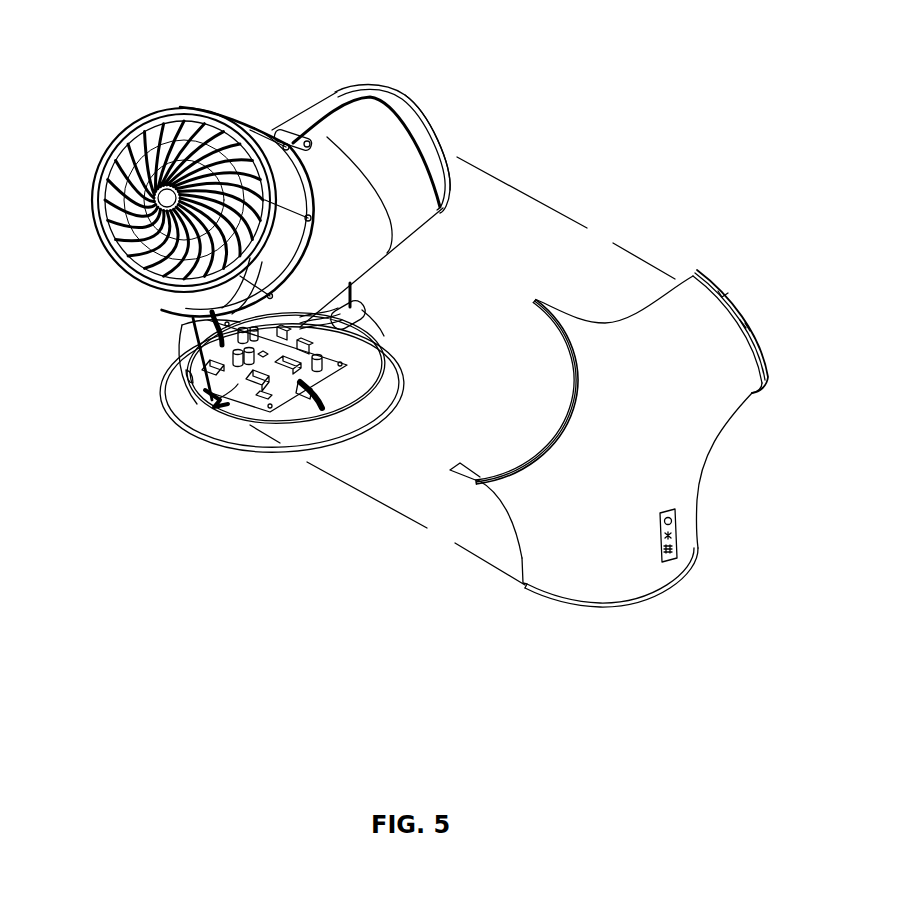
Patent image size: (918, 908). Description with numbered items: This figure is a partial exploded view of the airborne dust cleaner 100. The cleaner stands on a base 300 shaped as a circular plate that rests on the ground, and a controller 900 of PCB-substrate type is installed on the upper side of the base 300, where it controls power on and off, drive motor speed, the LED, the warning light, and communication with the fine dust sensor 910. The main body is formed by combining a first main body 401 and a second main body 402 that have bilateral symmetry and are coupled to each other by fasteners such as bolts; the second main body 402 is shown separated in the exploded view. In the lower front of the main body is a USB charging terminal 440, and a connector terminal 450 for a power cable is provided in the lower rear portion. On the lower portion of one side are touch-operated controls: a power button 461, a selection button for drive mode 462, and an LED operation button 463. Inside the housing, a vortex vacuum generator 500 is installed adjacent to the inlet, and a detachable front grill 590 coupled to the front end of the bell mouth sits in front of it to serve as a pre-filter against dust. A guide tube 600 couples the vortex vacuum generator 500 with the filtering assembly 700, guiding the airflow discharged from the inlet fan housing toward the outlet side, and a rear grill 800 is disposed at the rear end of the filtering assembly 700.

The airborne dust cleaner 100 is at (98, 33).
The base 300 is at (353, 425).
The first main body 401 is at (347, 104).
The second main body 402 is at (680, 420).
The USB charging terminal 440 is at (222, 410).
The connector terminal 450 is at (368, 320).
The power button 461 is at (673, 523).
The selection button for drive mode 462 is at (675, 542).
The LED operation button 463 is at (667, 560).
The vortex vacuum generator 500 is at (288, 163).
The front grill 590 is at (96, 256).
The guide tube 600 is at (347, 230).
The filtering assembly 700 is at (432, 228).
The rear grill 800 is at (425, 113).
The controller 900 is at (310, 381).
The fine dust sensor 910 is at (172, 350).